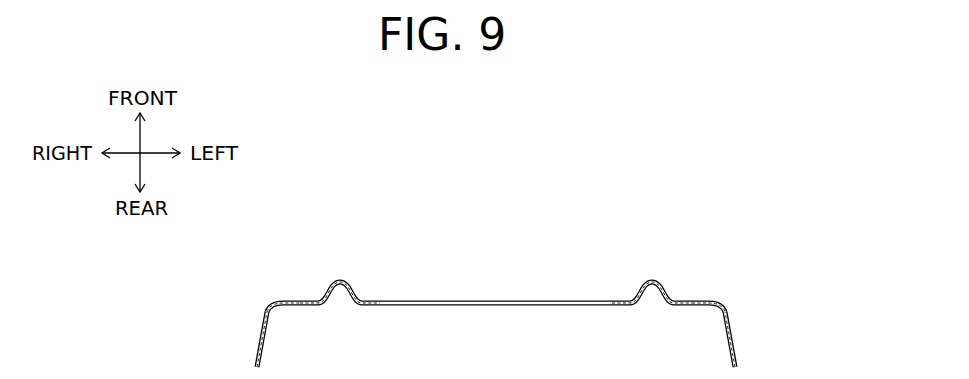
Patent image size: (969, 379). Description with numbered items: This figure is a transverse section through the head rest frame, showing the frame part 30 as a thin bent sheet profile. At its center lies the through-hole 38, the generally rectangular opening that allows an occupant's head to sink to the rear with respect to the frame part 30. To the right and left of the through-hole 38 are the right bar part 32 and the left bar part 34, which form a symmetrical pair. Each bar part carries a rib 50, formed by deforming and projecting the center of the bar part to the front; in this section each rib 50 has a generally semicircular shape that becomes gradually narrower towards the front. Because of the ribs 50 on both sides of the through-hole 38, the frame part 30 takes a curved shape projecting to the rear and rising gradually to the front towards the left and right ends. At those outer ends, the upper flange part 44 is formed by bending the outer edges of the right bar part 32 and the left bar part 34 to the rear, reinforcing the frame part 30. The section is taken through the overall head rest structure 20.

The vehicle body member 20 is at (477, 247).
The frame part 30 is at (517, 279).
The right bar part 32 is at (265, 312).
The left bar part 34 is at (728, 312).
The through-hole 38 is at (403, 302).
The upper flange part 44 is at (258, 348).
The rib 50 is at (340, 280).